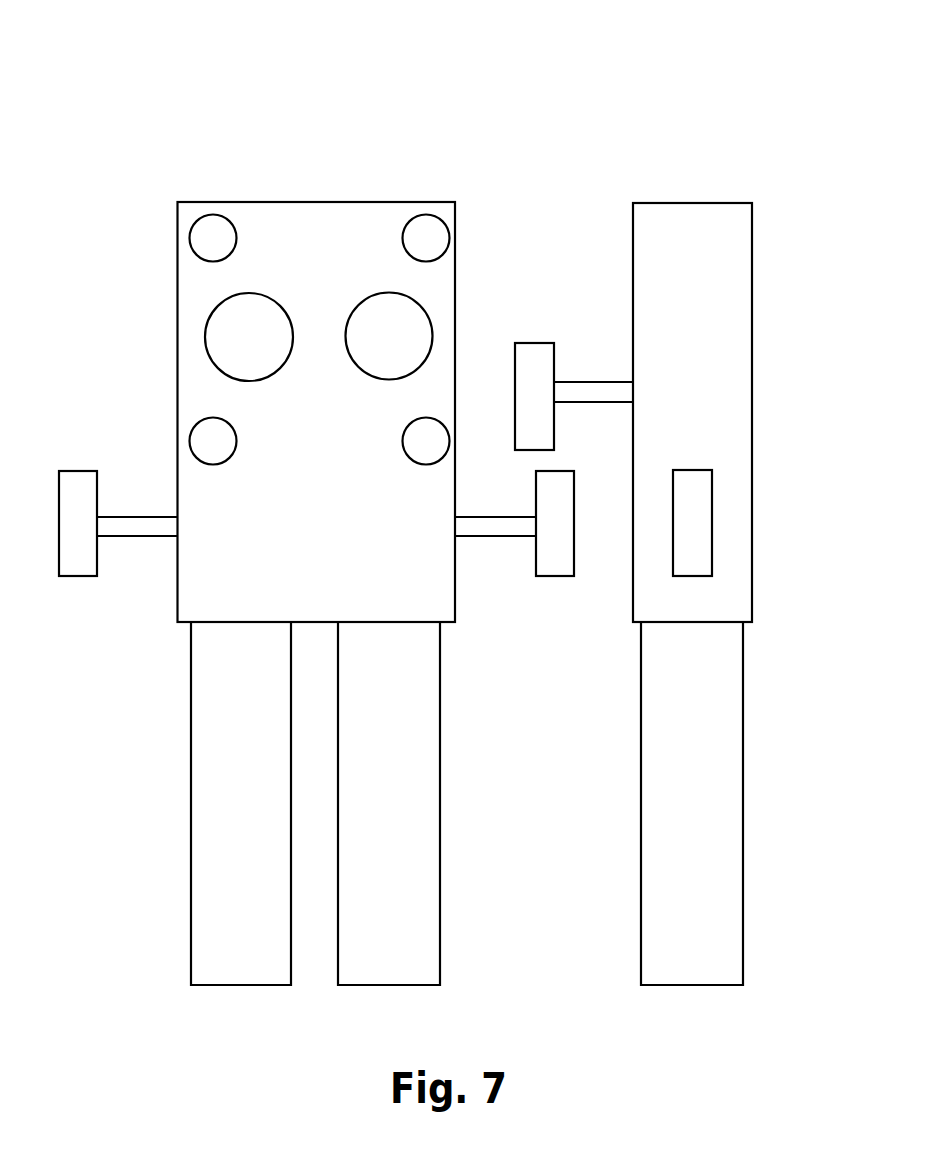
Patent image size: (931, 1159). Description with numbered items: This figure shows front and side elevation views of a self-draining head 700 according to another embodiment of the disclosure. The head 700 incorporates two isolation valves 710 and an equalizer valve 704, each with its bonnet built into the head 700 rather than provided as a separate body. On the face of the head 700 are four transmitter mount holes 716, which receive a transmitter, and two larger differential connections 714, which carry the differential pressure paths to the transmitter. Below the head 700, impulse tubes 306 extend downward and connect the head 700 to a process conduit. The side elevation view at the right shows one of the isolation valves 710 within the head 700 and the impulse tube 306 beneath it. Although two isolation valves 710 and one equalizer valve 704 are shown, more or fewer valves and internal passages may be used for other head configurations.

The head 700 is at (372, 145).
The impulse tubes 306 is at (640, 868).
The differential connections 714 is at (363, 295).
The transmitter mount holes 716 is at (212, 214).
The equalizer valve 704 is at (538, 343).
The isolation valves 710 is at (82, 576).